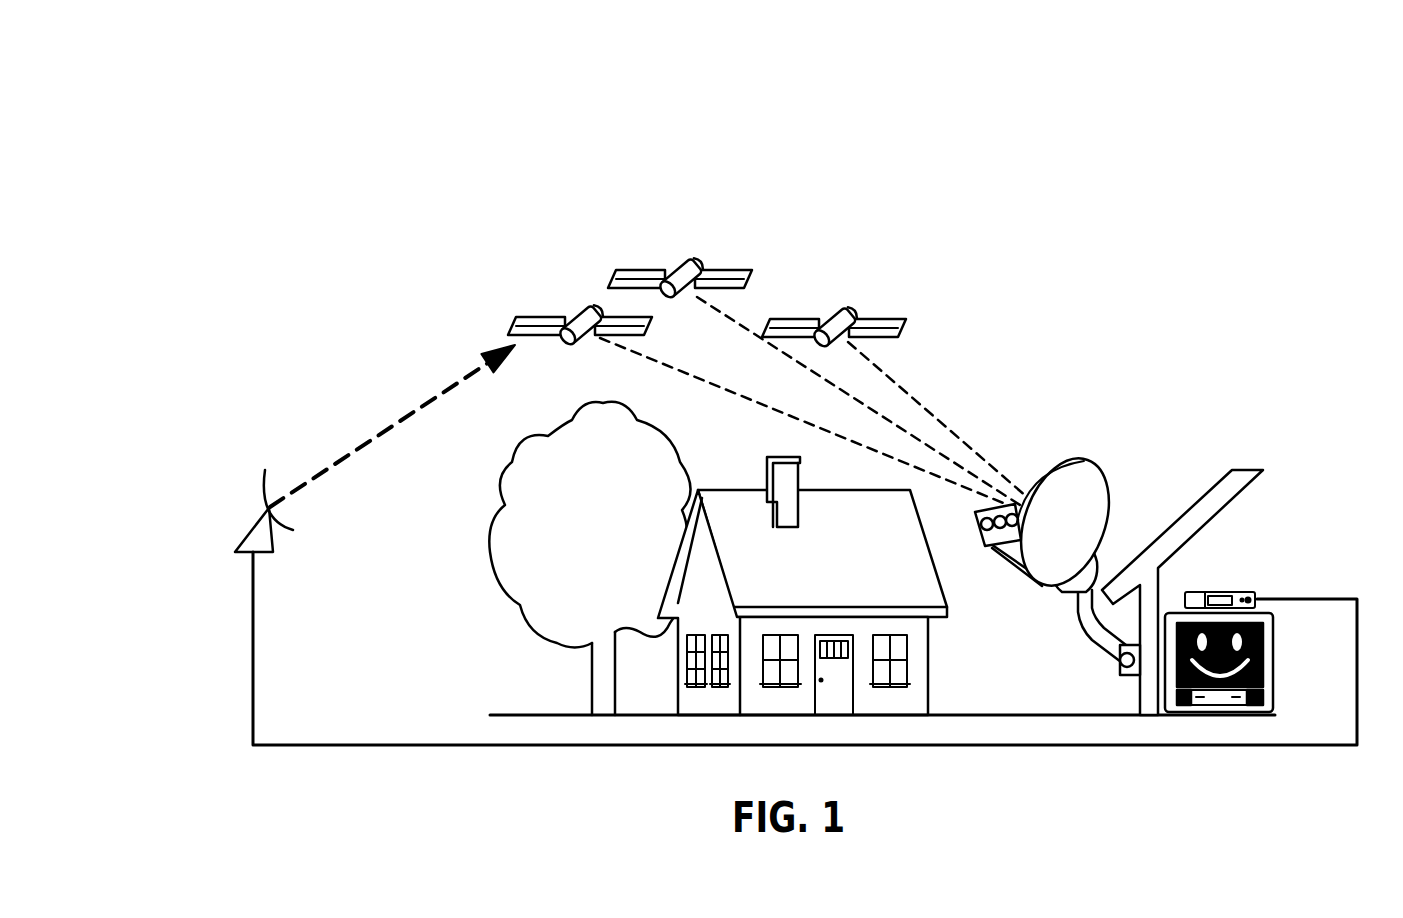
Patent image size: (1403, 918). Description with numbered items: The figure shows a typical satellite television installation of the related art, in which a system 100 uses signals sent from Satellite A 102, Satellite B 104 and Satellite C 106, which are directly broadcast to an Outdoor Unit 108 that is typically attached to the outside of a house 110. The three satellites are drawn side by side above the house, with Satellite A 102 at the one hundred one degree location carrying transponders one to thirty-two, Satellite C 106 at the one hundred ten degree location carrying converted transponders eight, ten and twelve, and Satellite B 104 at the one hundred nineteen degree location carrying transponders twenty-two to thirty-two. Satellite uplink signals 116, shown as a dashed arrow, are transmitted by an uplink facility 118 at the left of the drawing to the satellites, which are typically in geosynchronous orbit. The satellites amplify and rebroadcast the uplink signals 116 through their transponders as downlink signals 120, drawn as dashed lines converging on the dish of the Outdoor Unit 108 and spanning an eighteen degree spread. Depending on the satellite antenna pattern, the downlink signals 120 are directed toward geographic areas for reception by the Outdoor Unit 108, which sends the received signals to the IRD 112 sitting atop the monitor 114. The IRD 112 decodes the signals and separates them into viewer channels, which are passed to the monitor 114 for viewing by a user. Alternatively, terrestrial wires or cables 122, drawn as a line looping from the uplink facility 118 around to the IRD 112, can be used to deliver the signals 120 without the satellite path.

The system 100 is at (793, 108).
The Satellite A 102 is at (578, 298).
The Satellite B 104 is at (852, 312).
The Satellite C 106 is at (723, 267).
The Outdoor Unit (ODU) 108 is at (1080, 453).
The house 110 is at (1205, 490).
The IRD 112 is at (1223, 590).
The monitor 114 is at (1277, 646).
The satellite uplink signals 116 is at (397, 423).
The uplink facility 118 is at (253, 527).
The downlink signals 120 is at (968, 436).
The terrestrial wires or cables 122 is at (1297, 599).